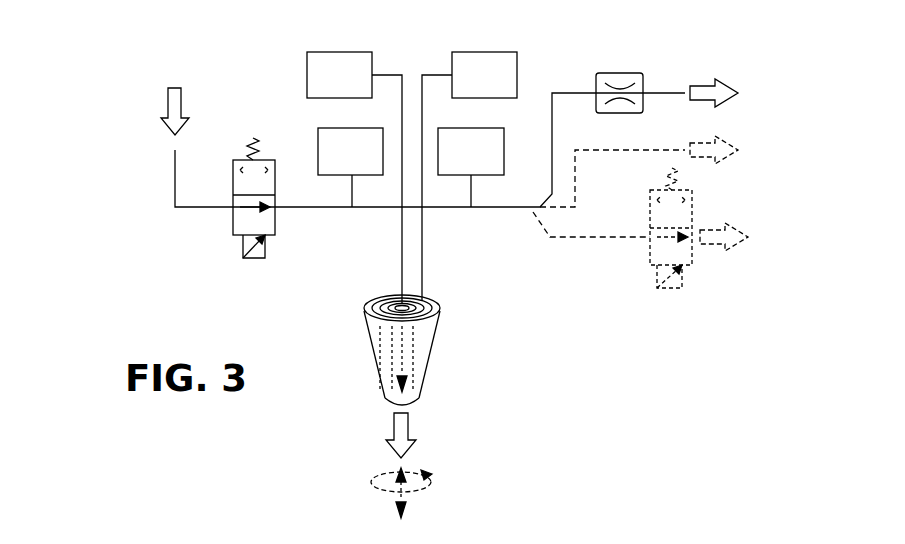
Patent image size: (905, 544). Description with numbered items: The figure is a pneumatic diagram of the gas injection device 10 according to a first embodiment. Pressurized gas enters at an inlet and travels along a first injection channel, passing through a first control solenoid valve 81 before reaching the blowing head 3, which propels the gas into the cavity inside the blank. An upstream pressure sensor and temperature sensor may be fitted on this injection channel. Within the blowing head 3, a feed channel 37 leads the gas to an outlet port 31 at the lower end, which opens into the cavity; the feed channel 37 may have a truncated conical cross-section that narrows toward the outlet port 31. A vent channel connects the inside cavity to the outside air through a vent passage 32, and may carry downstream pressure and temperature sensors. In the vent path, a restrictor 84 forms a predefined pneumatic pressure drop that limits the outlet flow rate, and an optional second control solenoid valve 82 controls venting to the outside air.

The gas injection device 10 is at (138, 166).
The first control solenoid valve 81 is at (228, 213).
The restrictor 84 is at (627, 72).
The second control solenoid valve 82 is at (642, 247).
The blowing head 3 is at (394, 405).
The vent passage 32 is at (436, 330).
The feed channel 37 is at (380, 364).
The outlet port 31 is at (392, 406).